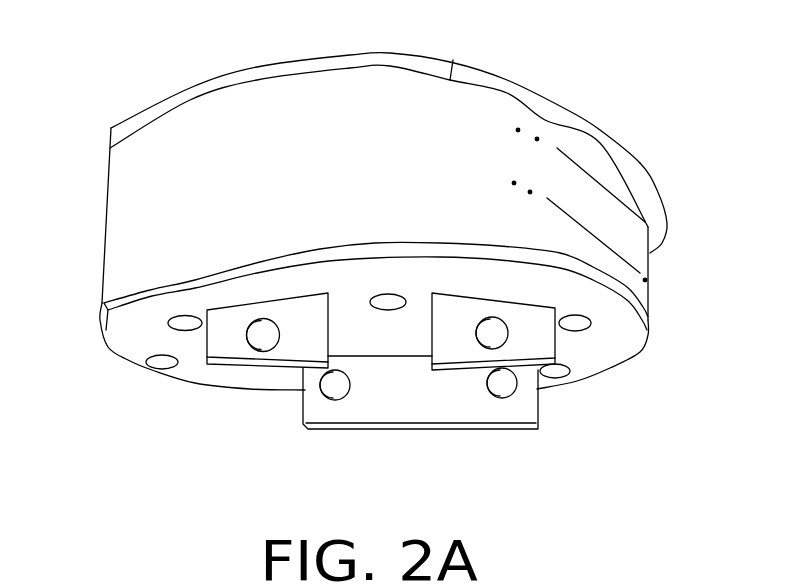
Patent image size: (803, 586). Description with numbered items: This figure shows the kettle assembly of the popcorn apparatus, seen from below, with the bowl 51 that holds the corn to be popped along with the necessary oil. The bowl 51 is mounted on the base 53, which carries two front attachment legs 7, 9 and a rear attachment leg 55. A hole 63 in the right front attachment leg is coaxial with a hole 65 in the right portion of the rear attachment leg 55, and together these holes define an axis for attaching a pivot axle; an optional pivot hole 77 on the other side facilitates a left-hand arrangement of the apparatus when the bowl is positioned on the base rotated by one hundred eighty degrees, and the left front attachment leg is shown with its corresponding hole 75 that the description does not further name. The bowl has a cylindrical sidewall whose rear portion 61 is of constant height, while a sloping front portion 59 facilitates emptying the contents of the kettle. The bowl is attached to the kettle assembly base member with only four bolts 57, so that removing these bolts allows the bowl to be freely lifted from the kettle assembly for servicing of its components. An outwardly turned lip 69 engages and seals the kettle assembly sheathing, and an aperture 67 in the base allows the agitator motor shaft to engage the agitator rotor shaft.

The bowl 51 is at (108, 183).
The base 53 is at (100, 303).
The rear attachment leg 55 is at (408, 403).
The bolts 57 is at (171, 330).
The sloping front portion 59 is at (637, 163).
The rear portion 61 is at (279, 62).
The hole 63 is at (500, 346).
The hole 65 is at (517, 397).
The aperture 67 is at (385, 295).
The outwardly turned lip 69 is at (374, 77).
The hole in plate 75 is at (250, 342).
The optional pivot hole 77 is at (325, 398).
The front attachment leg 7 is at (542, 340).
The front attachment leg 9 is at (313, 328).